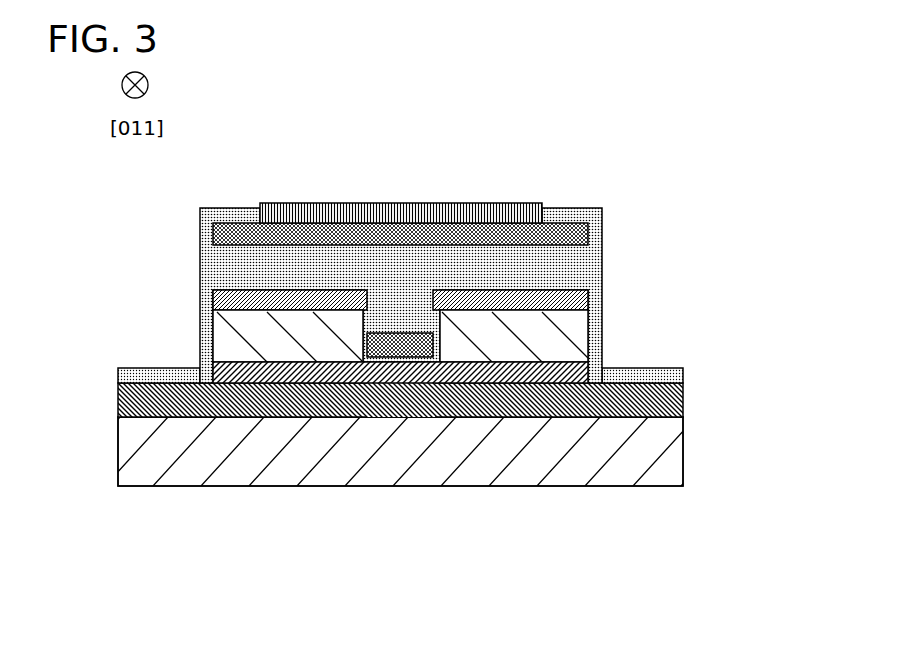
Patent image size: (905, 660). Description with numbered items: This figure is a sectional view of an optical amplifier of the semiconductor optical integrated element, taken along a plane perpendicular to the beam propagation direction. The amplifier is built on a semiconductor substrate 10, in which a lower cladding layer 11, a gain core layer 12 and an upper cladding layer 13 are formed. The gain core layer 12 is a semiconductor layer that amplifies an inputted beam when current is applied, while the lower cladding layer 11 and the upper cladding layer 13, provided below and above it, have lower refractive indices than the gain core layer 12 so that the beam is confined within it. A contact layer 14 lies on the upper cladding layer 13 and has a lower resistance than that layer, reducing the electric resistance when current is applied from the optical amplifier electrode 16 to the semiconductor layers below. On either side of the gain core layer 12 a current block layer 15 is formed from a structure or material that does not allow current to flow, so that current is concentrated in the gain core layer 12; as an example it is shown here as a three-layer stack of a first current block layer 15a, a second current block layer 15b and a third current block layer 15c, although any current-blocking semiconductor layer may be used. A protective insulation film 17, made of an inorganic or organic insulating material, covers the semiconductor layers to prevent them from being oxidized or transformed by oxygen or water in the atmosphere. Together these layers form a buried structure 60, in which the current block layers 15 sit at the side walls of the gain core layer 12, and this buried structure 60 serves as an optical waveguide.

The buried structure 60 is at (415, 120).
The semiconductor substrate 10 is at (243, 462).
The lower cladding layer 11 is at (118, 405).
The gain core layer 12 is at (412, 397).
The upper cladding layer 13 is at (212, 262).
The contact layer 14 is at (243, 223).
The current block layer 15 is at (403, 318).
The first current block layer 15a is at (215, 370).
The second current block layer 15b is at (248, 352).
The third current block layer 15c is at (213, 299).
The optical amplifier electrode 16 is at (408, 204).
The protective insulation film 17 is at (118, 385).